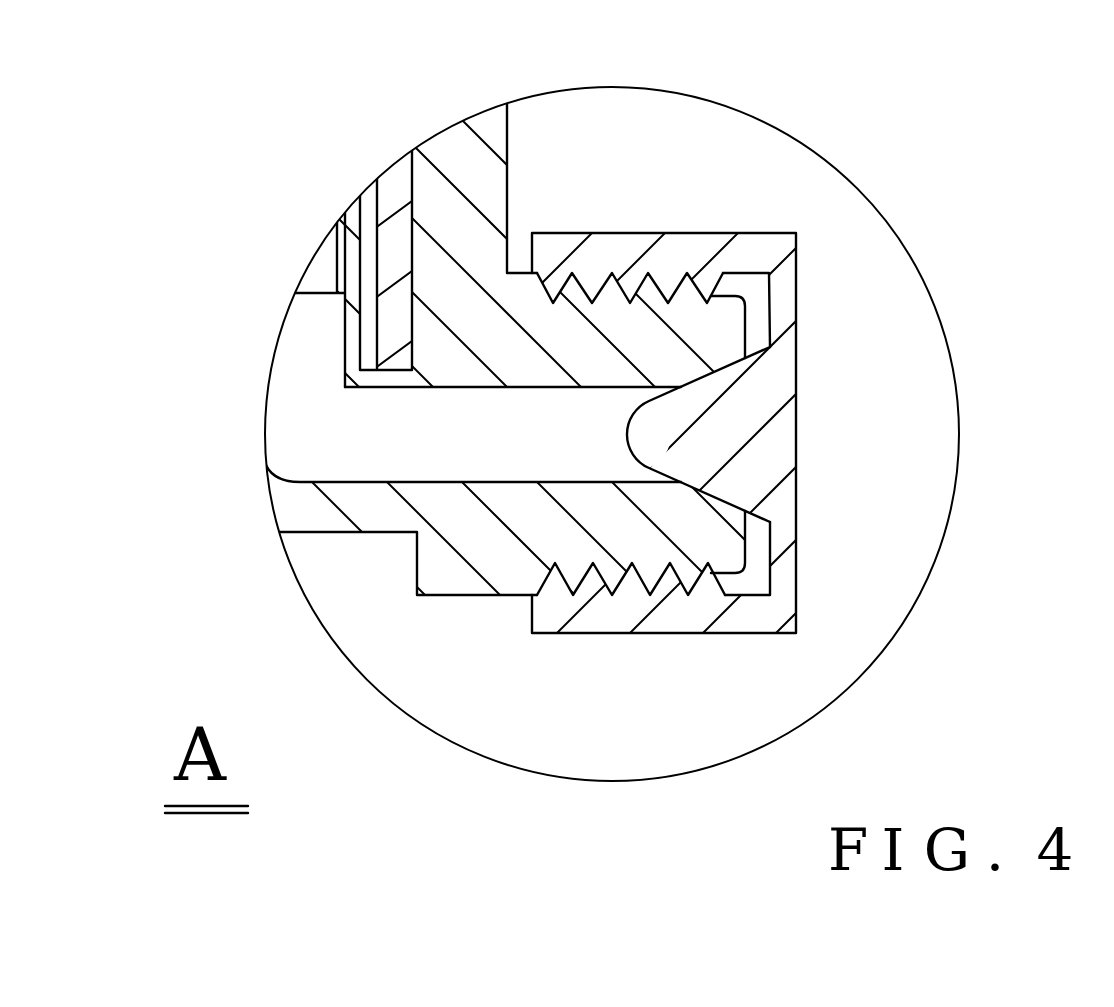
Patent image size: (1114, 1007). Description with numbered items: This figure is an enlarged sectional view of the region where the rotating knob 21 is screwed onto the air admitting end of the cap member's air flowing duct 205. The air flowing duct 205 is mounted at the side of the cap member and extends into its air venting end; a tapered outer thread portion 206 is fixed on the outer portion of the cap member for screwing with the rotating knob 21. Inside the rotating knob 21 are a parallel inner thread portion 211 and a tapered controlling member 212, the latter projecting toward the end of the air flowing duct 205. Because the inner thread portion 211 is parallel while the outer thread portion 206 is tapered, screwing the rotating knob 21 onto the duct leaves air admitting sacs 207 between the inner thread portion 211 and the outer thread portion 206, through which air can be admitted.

The rotating knob 21 is at (795, 283).
The air flowing duct 205 is at (327, 438).
The tapered outer thread portion 206 is at (570, 572).
The air admitting sacs 207 is at (688, 285).
The parallel inner thread portion 211 is at (707, 583).
The tapered controlling member 212 is at (683, 427).